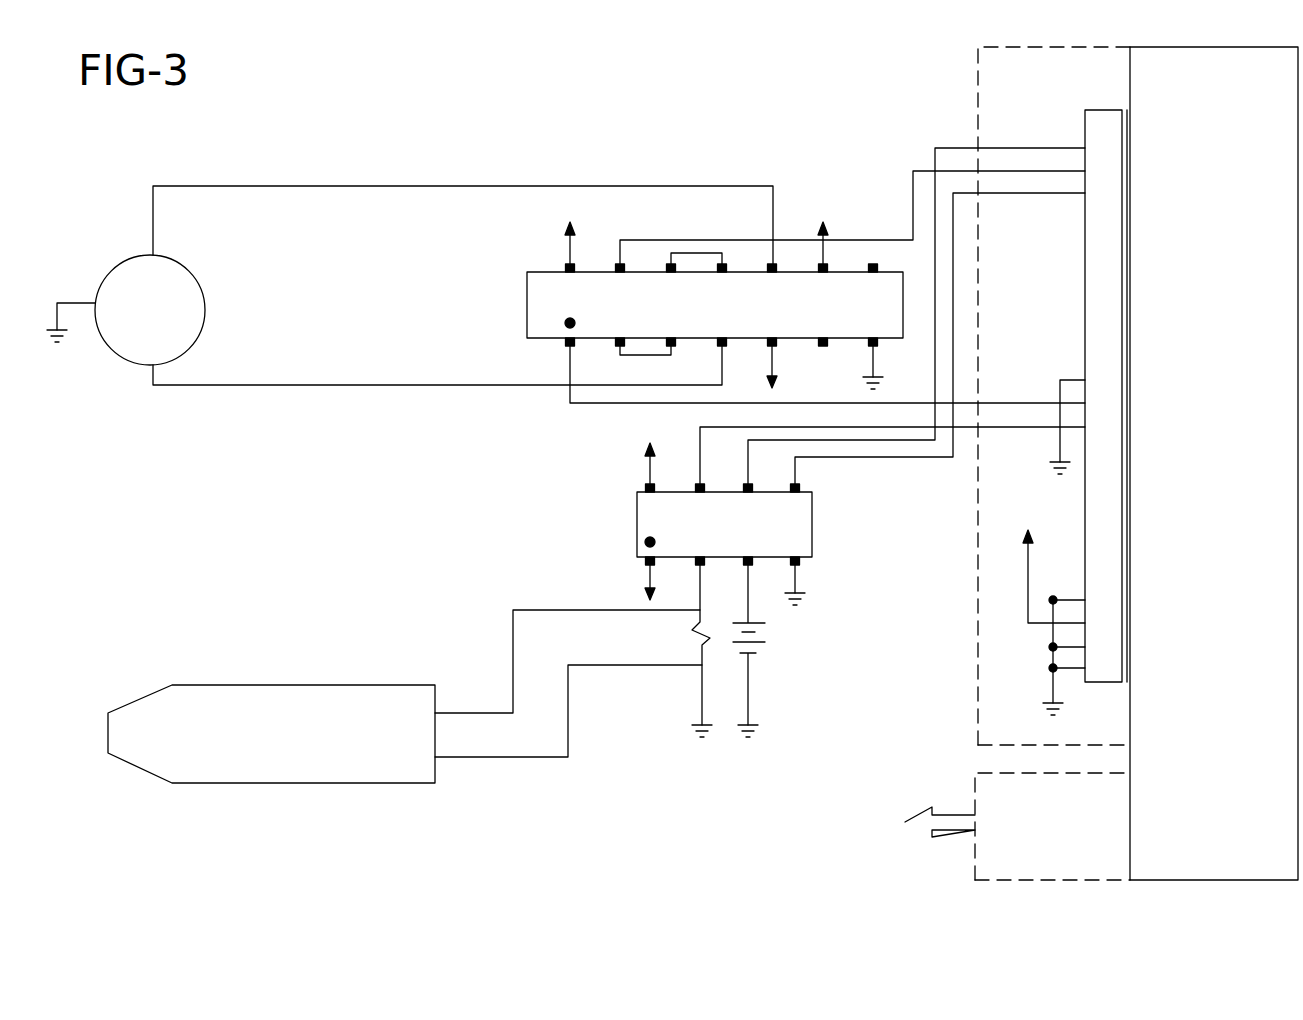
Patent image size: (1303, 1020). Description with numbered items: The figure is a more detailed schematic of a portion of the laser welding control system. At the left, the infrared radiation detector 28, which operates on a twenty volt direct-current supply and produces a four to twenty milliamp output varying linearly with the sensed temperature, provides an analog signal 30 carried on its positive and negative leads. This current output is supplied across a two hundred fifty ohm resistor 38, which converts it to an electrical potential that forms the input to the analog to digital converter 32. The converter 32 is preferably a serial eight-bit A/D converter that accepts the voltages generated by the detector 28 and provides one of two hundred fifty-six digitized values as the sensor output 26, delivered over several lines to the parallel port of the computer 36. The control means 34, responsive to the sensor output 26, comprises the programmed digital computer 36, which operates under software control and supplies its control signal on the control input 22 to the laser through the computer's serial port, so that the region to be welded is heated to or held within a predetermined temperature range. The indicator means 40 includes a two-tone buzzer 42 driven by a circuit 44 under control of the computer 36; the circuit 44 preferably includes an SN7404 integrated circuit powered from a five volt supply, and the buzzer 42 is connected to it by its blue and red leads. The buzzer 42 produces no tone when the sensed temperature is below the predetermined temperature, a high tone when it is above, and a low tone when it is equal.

The control input 22 is at (952, 833).
The sensor output 26 is at (860, 460).
The infrared radiation detector 28 is at (302, 783).
The analog signal 30 is at (552, 605).
The analog to digital converter 32 is at (637, 512).
The control means 34 is at (940, 118).
The programmed digital computer 36 is at (1222, 560).
The resistor 38 is at (712, 640).
The indicator means 40 is at (482, 162).
The two-tone buzzer 42 is at (205, 305).
The circuit 44 is at (527, 298).